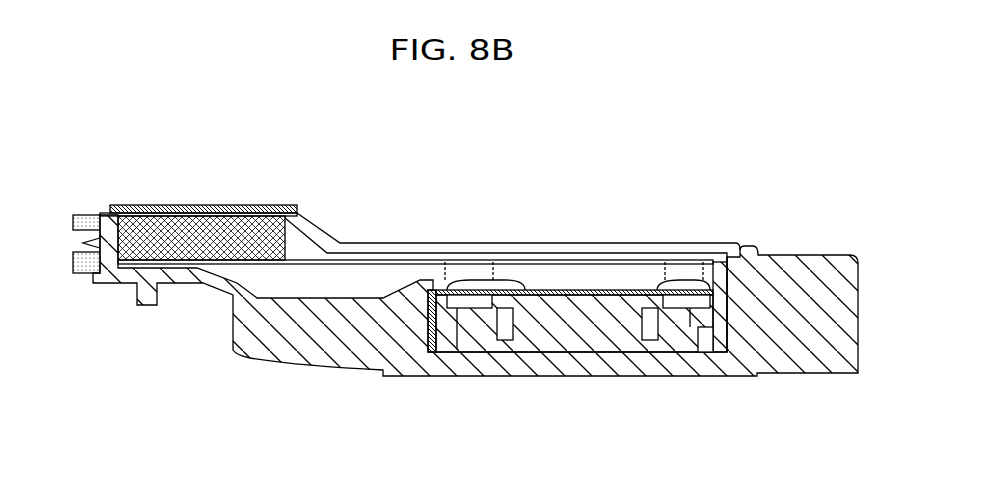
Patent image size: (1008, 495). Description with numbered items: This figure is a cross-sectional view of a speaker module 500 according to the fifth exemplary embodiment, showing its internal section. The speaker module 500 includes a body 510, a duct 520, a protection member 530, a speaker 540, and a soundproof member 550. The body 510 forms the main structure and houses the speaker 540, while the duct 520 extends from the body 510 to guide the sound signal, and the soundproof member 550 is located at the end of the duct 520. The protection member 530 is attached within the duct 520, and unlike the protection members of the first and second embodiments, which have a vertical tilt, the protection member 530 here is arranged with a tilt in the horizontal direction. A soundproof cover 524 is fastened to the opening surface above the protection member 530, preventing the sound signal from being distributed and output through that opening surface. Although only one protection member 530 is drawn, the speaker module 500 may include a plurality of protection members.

The speaker module 500 is at (623, 193).
The body 510 is at (798, 345).
The duct 520 is at (172, 285).
The soundproof cover 524 is at (172, 204).
The protection member 530 is at (233, 226).
The speaker 540 is at (578, 302).
The soundproof member 550 is at (82, 274).